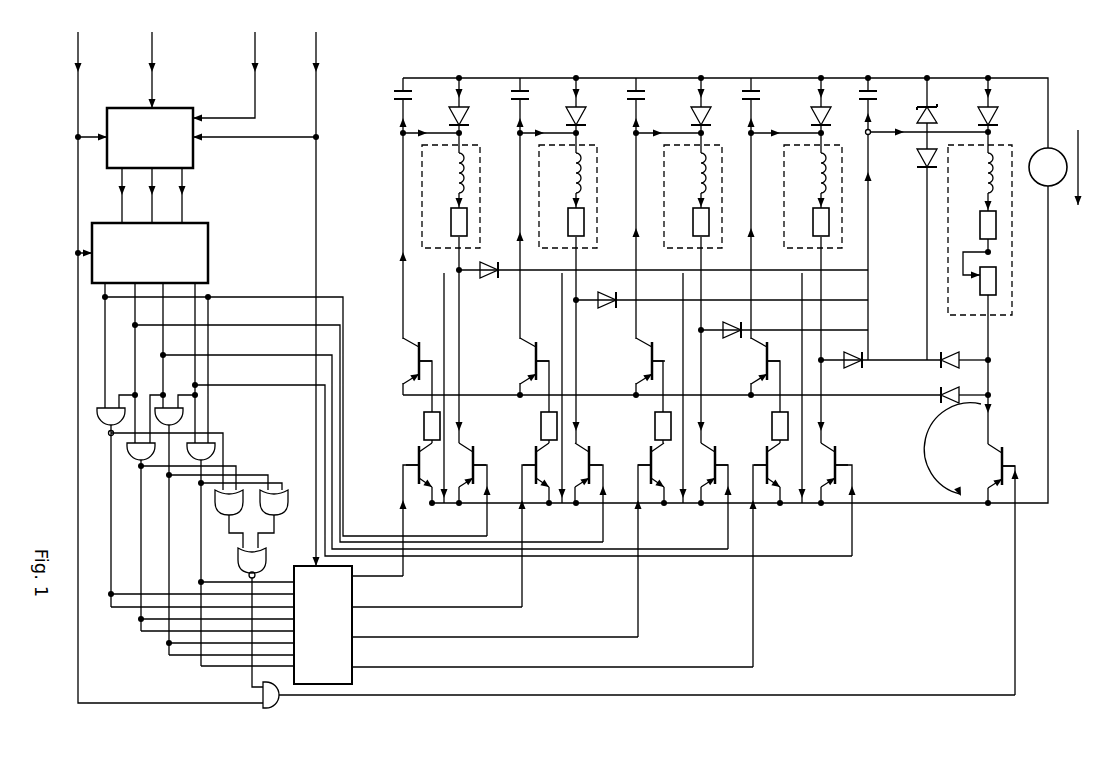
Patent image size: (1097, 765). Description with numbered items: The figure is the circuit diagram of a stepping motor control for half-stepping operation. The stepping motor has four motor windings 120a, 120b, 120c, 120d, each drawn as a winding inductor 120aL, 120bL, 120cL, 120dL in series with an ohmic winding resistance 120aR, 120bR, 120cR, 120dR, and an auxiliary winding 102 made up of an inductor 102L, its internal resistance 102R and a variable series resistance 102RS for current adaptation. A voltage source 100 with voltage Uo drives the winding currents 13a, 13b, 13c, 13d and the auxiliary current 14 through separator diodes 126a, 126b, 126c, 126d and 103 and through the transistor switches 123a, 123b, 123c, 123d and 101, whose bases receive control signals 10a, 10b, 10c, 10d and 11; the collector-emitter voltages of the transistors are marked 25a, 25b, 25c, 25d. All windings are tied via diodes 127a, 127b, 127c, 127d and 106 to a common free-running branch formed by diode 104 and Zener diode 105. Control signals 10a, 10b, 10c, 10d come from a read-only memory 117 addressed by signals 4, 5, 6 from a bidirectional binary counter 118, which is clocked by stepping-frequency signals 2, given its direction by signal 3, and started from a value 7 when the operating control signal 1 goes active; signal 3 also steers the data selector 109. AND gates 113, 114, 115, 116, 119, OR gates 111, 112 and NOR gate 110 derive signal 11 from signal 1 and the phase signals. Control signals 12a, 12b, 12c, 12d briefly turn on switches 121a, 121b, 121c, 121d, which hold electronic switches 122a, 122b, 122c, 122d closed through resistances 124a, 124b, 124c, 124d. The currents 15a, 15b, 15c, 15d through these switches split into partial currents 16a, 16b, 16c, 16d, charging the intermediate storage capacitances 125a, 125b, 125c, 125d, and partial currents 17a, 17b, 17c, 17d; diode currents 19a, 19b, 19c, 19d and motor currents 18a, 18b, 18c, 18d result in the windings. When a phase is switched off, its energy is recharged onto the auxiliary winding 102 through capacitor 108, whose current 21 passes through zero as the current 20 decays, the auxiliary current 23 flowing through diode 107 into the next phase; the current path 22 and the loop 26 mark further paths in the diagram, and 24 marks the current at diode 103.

The operating control signal 1 is at (161, 367).
The logic signals 2 is at (145, 70).
The counting direction signal 3 is at (256, 299).
The value 7 is at (226, 77).
The address signal 4 is at (126, 195).
The address signal 5 is at (156, 195).
The address signal 6 is at (186, 195).
The bidirectional binary counter 118 is at (150, 138).
The read-only memory 117 is at (150, 253).
The AND gate 115 is at (104, 421).
The AND gate 116 is at (178, 421).
The AND gate 113 is at (134, 453).
The AND gate 114 is at (194, 454).
The OR gate 111 is at (229, 502).
The OR gate 112 is at (274, 502).
The NOR gate 110 is at (252, 563).
The data selector 109 is at (323, 625).
The AND gate 119 is at (639, 700).
The capacitance 125a is at (392, 93).
The capacitance 125b is at (509, 93).
The capacitance 125c is at (625, 93).
The capacitance 125d is at (740, 93).
The partial current 16a is at (393, 154).
The partial current 16b is at (510, 154).
The partial current 16c is at (625, 154).
The partial current 16d is at (741, 154).
The current 15a is at (396, 269).
The current 15b is at (509, 269).
The current 15c is at (624, 269).
The current 15d is at (741, 269).
The partial current 17a is at (429, 142).
The partial current 17b is at (546, 142).
The partial current 17c is at (667, 142).
The partial current 17d is at (784, 142).
The diode current 19a is at (450, 92).
The diode current 19b is at (567, 92).
The diode current 19c is at (689, 92).
The diode current 19d is at (808, 92).
The separator diode 126a is at (444, 126).
The separator diode 126b is at (561, 126).
The separator diode 126c is at (686, 126).
The separator diode 126d is at (805, 126).
The motor winding 120a is at (451, 209).
The motor winding 120b is at (568, 224).
The motor winding 120c is at (693, 239).
The motor winding 120d is at (813, 254).
The winding inductor 120aL is at (444, 173).
The winding inductor 120bL is at (561, 173).
The winding inductor 120cL is at (686, 173).
The winding inductor 120dL is at (806, 173).
The ohmic winding resistance 120aR is at (459, 222).
The ohmic winding resistance 120bR is at (576, 222).
The ohmic winding resistance 120cR is at (701, 222).
The ohmic winding resistance 120dR is at (821, 222).
The motor current 18a is at (447, 200).
The motor current 18b is at (564, 200).
The motor current 18c is at (689, 200).
The motor current 18d is at (809, 200).
The diode 127a is at (663, 281).
The diode 127b is at (722, 311).
The diode 127c is at (784, 341).
The diode 127d is at (880, 371).
The electronic switch 122a is at (406, 375).
The electronic switch 122b is at (524, 375).
The electronic switch 122c is at (640, 375).
The electronic switch 122d is at (758, 375).
The resistance 124a is at (410, 427).
The resistance 124b is at (532, 427).
The resistance 124c is at (646, 427).
The resistance 124d is at (765, 427).
The collector-emitter voltage 25a is at (454, 388).
The collector-emitter voltage 25b is at (572, 388).
The collector-emitter voltage 25c is at (693, 388).
The collector-emitter voltage 25d is at (812, 388).
The current 13a is at (472, 356).
The current 13b is at (589, 371).
The current 13c is at (713, 386).
The current 13d is at (834, 401).
The switch 121a is at (428, 474).
The switch 121b is at (546, 474).
The switch 121c is at (661, 474).
The switch 121d is at (777, 474).
The electronic switch 123a is at (466, 474).
The electronic switch 123b is at (583, 474).
The electronic switch 123c is at (708, 474).
The electronic switch 123d is at (828, 474).
The control signal 12a is at (415, 520).
The control signal 12b is at (533, 536).
The control signal 12c is at (649, 551).
The control signal 12d is at (765, 566).
The control signal 10a is at (477, 500).
The control signal 10b is at (593, 503).
The control signal 10c is at (718, 507).
The control signal 10d is at (841, 510).
The capacitor 108 is at (880, 93).
The capacitor current 21 is at (860, 121).
The current path 22 is at (931, 144).
The current 20 is at (860, 247).
The diode 104 is at (936, 113).
The Zener diode 105 is at (916, 254).
The diode 103 is at (996, 119).
The current arrow 24 is at (978, 92).
The auxiliary winding 102 is at (980, 240).
The inductor 102L is at (973, 173).
The ohmic internal resistance 102R is at (974, 225).
The variable series resistance 102RS is at (974, 282).
The current 23 is at (977, 203).
The diode 106 is at (966, 352).
The diode 107 is at (959, 405).
The current 14 is at (999, 369).
The current loop 26 is at (952, 449).
The electronic switch 101 is at (990, 473).
The control signal 11 is at (1009, 580).
The voltage source 100 is at (1054, 178).
The supply voltage Uo is at (1070, 167).